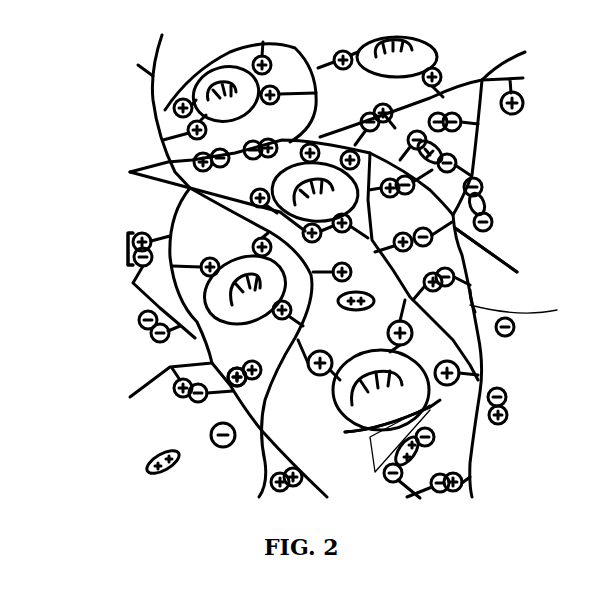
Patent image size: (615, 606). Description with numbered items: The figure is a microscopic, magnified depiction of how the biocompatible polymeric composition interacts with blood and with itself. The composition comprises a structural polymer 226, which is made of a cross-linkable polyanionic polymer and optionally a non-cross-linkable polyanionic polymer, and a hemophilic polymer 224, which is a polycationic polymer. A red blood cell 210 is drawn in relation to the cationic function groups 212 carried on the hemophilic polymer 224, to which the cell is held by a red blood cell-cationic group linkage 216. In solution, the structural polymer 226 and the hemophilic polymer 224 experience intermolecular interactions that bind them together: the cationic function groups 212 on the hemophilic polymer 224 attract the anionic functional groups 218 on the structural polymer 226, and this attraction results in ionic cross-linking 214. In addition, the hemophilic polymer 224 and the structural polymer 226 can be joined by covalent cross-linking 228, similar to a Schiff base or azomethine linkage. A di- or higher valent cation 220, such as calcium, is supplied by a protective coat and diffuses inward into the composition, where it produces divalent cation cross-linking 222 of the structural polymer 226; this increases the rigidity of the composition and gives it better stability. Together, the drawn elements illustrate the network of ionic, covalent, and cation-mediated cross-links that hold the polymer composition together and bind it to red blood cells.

The red blood cell 210 is at (213, 117).
The cationic function groups 212 is at (251, 196).
The ionic cross-linking 214 is at (127, 250).
The red blood cell-cationic group linkage 216 is at (228, 375).
The anionic functional groups 218 is at (212, 430).
The divalent cation 220 is at (148, 455).
The divalent cation cross-linking 222 is at (440, 400).
The hemophilic polymer 224 is at (470, 305).
The structural polymer 226 is at (463, 260).
The covalent cross-linking 228 is at (482, 100).